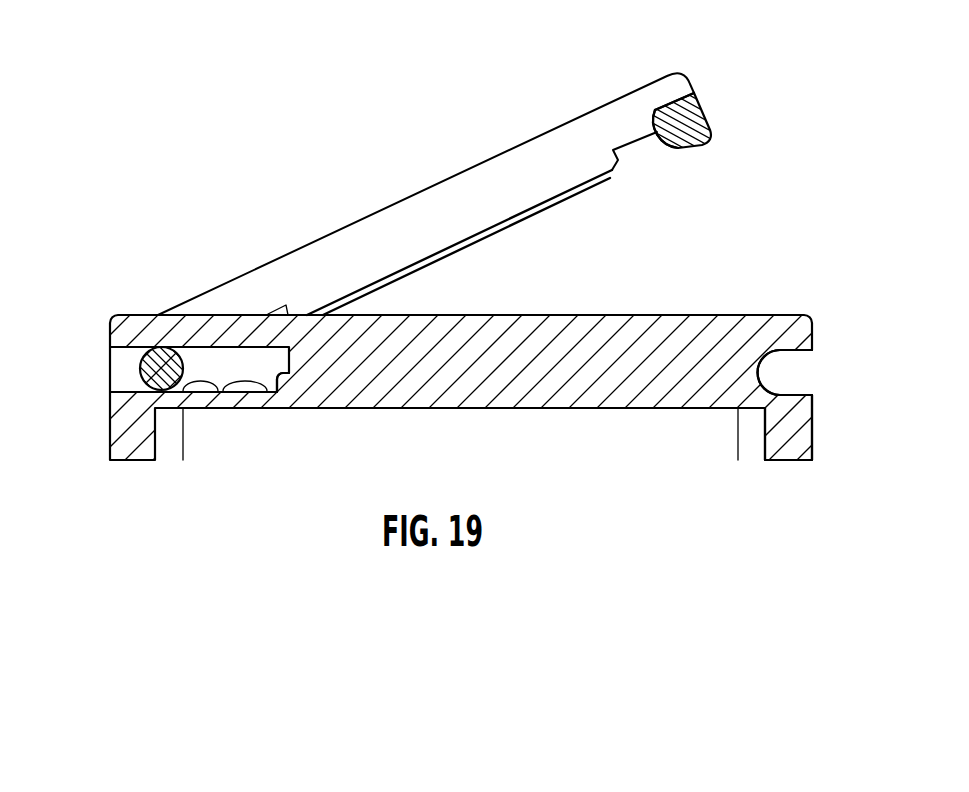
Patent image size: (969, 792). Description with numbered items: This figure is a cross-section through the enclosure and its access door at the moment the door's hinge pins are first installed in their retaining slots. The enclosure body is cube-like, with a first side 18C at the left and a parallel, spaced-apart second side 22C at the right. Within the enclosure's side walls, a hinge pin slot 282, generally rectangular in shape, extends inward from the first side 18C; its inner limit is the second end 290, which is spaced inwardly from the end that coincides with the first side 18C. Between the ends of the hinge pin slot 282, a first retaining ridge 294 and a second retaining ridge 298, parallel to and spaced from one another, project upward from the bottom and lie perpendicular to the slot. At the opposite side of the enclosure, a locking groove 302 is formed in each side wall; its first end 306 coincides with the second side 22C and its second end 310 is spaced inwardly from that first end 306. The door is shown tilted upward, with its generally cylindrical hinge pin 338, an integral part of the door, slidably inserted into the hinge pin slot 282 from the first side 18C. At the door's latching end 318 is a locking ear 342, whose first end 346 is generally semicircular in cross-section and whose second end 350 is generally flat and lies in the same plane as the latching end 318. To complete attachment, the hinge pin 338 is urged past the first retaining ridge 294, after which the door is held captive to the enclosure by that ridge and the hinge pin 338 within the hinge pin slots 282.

The first side 18C is at (110, 412).
The second side 22C is at (814, 430).
The hinge pin slot 282 is at (212, 360).
The second end 290 is at (293, 407).
The first retaining ridge 294 is at (213, 393).
The second retaining ridge 298 is at (263, 385).
The hinge pin 338 is at (153, 360).
The first end 306 is at (806, 376).
The locking groove 302 is at (780, 348).
The second end 310 is at (755, 370).
The latching end 318 is at (689, 84).
The second end 350 is at (707, 116).
The locking ear 342 is at (651, 110).
The first end 346 is at (658, 149).